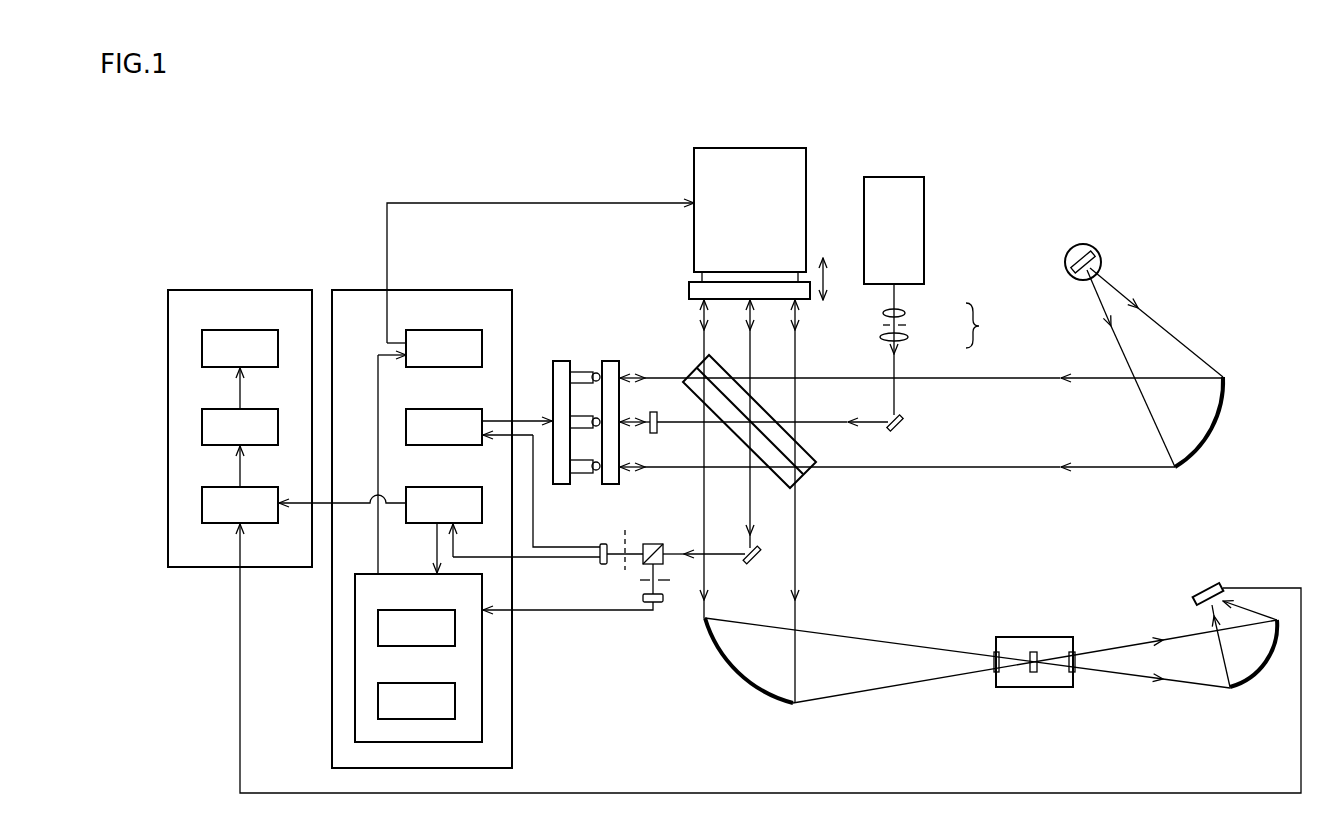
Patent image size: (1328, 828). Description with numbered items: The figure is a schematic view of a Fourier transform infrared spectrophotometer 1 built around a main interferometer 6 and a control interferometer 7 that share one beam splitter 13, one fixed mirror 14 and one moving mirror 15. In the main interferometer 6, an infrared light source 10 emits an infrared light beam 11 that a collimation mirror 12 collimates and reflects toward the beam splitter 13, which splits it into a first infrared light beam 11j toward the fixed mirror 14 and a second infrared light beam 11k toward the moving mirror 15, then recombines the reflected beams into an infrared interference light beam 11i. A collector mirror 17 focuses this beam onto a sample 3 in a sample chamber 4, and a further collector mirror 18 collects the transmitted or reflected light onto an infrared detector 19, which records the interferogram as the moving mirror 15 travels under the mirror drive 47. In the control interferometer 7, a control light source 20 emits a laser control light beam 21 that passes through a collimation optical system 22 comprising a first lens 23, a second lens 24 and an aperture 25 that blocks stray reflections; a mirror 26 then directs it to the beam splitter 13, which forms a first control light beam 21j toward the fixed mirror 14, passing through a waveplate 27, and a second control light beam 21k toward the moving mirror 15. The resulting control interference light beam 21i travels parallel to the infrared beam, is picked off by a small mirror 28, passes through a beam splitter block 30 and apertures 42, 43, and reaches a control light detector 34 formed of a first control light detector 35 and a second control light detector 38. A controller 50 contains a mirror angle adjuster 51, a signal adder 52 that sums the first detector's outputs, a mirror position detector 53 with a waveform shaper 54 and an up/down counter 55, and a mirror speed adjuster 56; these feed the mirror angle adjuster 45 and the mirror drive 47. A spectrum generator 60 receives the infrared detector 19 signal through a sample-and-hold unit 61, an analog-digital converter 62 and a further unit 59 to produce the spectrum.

The Fourier transform infrared spectrophotometer 1 is at (1240, 146).
The sample 3 is at (1033, 652).
The sample chamber 4 is at (1068, 637).
The main interferometer 6 is at (1124, 244).
The control interferometer 7 is at (940, 174).
The infrared light source 10 is at (1082, 244).
The infrared light beam 11 is at (1185, 343).
The infrared interference light beam 11i is at (797, 527).
The first infrared light beam 11j is at (653, 372).
The second infrared light beam 11k is at (796, 338).
The collimation mirror 12 is at (1207, 443).
The beam splitter 13 is at (818, 458).
The fixed mirror 14 is at (610, 361).
The moving mirror 15 is at (689, 292).
The collector mirror 17 is at (745, 675).
The collector mirror 18 is at (1243, 680).
The infrared detector 19 is at (1205, 583).
The control light source 20 is at (895, 177).
The control light beam 21 is at (896, 300).
The control interference light beam 21i is at (753, 500).
The first control light beam 21j is at (684, 428).
The second control light beam 21k is at (752, 360).
The collimation optical system 22 is at (941, 326).
The first lens 23 is at (905, 313).
The second lens 24 is at (908, 337).
The aperture 25 is at (880, 325).
The mirror 26 is at (900, 430).
The waveplate 27 is at (655, 435).
The mirror 28 is at (760, 560).
The beam splitter block 30 is at (655, 543).
The control light detector 34 is at (620, 581).
The first control light detector 35 is at (603, 543).
The second control light detector 38 is at (664, 603).
The aperture 42 is at (625, 530).
The aperture 43 is at (640, 580).
The mirror angle adjuster 45 is at (560, 361).
The mirror drive 47 is at (752, 148).
The controller 50 is at (482, 289).
The mirror angle adjuster 51 is at (454, 409).
The signal adder 52 is at (454, 487).
The mirror position detector 53 is at (400, 574).
The waveform shaper 54 is at (428, 610).
The up/down counter 55 is at (428, 683).
The mirror speed adjuster 56 is at (454, 330).
The display unit 59 is at (250, 330).
The spectrum generator 60 is at (282, 289).
The sample-and-hold unit 61 is at (250, 487).
The analog-digital converter 62 is at (250, 409).